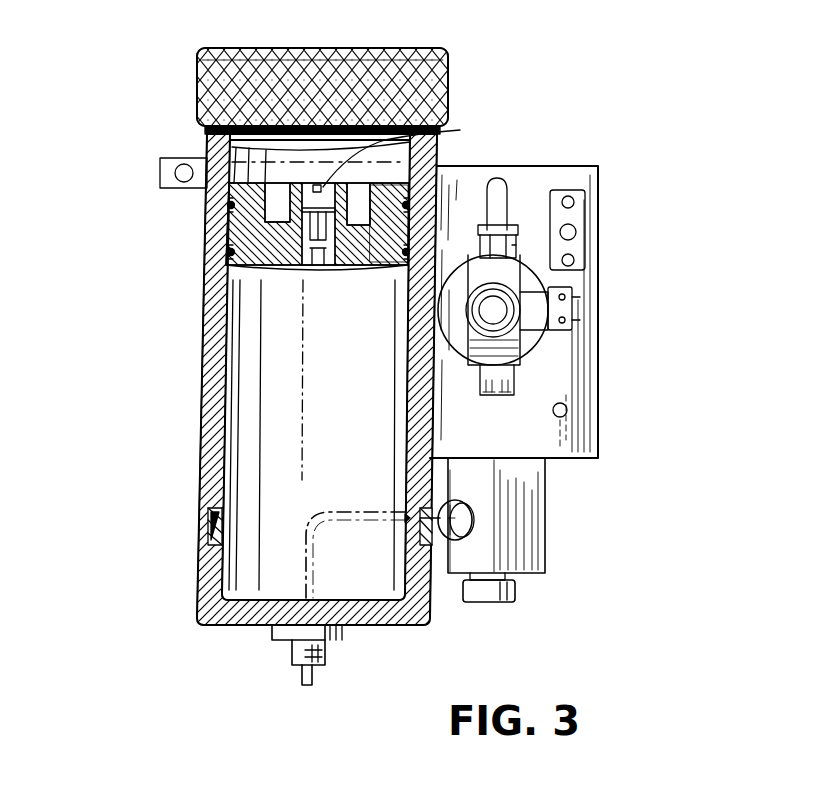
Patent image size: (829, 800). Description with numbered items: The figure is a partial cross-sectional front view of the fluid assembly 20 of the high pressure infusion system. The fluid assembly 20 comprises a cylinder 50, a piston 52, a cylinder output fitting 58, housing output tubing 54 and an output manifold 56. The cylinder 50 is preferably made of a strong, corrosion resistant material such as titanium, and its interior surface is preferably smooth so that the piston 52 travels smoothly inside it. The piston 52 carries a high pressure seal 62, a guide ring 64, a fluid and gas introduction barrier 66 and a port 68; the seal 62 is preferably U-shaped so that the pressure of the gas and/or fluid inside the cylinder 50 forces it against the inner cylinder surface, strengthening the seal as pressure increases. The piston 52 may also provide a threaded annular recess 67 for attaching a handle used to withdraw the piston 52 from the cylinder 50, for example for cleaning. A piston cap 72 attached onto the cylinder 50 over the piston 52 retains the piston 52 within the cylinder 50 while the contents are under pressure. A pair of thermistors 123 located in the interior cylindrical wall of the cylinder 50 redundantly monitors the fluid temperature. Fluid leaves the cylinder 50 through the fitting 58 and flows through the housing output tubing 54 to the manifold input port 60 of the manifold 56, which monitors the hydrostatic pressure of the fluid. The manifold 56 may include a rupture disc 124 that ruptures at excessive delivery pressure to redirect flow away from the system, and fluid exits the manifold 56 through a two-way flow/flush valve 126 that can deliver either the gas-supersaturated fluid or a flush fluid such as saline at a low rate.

The fluid assembly 20 is at (150, 110).
The piston cap 72 is at (450, 80).
The port 68 is at (448, 112).
The threaded annular recess 67 is at (383, 190).
The two-way flow/flush valve 126 is at (507, 180).
The guide ring 64 is at (222, 206).
The piston 52 is at (218, 234).
The high pressure seal 62 is at (226, 256).
The output manifold 56 is at (610, 312).
The fluid and gas introduction barrier 66 is at (305, 268).
The cylinder 50 is at (200, 393).
The thermistors 123 is at (205, 530).
The housing output tubing 54 is at (300, 566).
The cylinder output fitting 58 is at (290, 655).
The manifold input port 60 is at (467, 520).
The rupture disc 124 is at (487, 598).